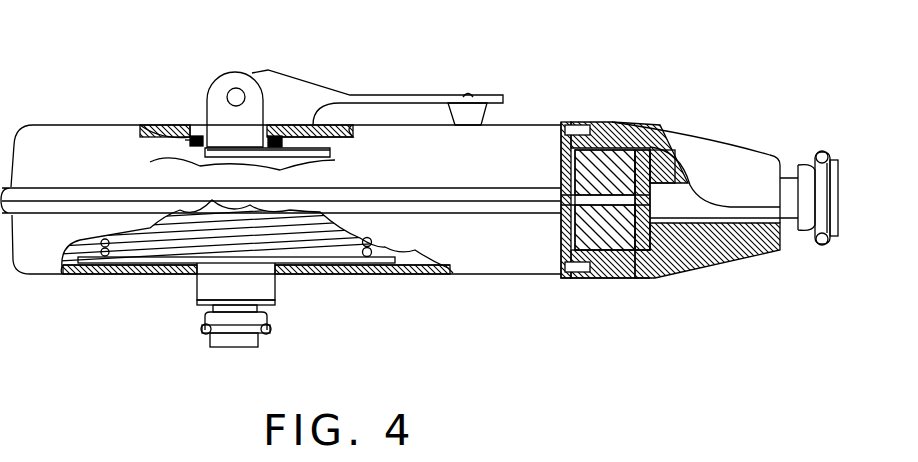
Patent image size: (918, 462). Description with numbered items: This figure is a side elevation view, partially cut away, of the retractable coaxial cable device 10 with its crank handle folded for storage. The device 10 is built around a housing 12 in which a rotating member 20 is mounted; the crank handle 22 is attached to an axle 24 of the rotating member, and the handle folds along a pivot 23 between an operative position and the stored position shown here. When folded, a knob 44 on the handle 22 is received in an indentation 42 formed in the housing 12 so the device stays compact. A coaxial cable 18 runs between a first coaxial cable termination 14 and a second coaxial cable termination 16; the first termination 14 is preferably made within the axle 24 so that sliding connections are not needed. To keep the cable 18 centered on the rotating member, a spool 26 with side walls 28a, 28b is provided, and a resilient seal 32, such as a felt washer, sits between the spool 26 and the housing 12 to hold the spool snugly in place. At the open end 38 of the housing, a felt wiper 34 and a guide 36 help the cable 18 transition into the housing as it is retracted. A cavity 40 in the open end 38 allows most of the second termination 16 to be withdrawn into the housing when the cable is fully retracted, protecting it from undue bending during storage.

The retractable coaxial cable device 10 is at (548, 70).
The housing 12 is at (515, 263).
The first coaxial cable termination 14 is at (257, 342).
The second coaxial cable termination 16 is at (807, 212).
The coaxial cable 18 is at (392, 265).
The rotating member 20 is at (199, 116).
The crank handle 22 is at (300, 90).
The pivot 23 is at (233, 96).
The axle 24 is at (243, 133).
The spool 26 is at (117, 273).
The side wall 28a is at (293, 157).
The side wall 28b is at (152, 262).
The resilient seal 32 is at (190, 147).
The felt wiper 34 is at (612, 168).
The guide 36 is at (650, 160).
The open end 38 is at (788, 227).
The cavity 40 is at (680, 227).
The indentation 42 is at (482, 132).
The knob 44 is at (473, 113).